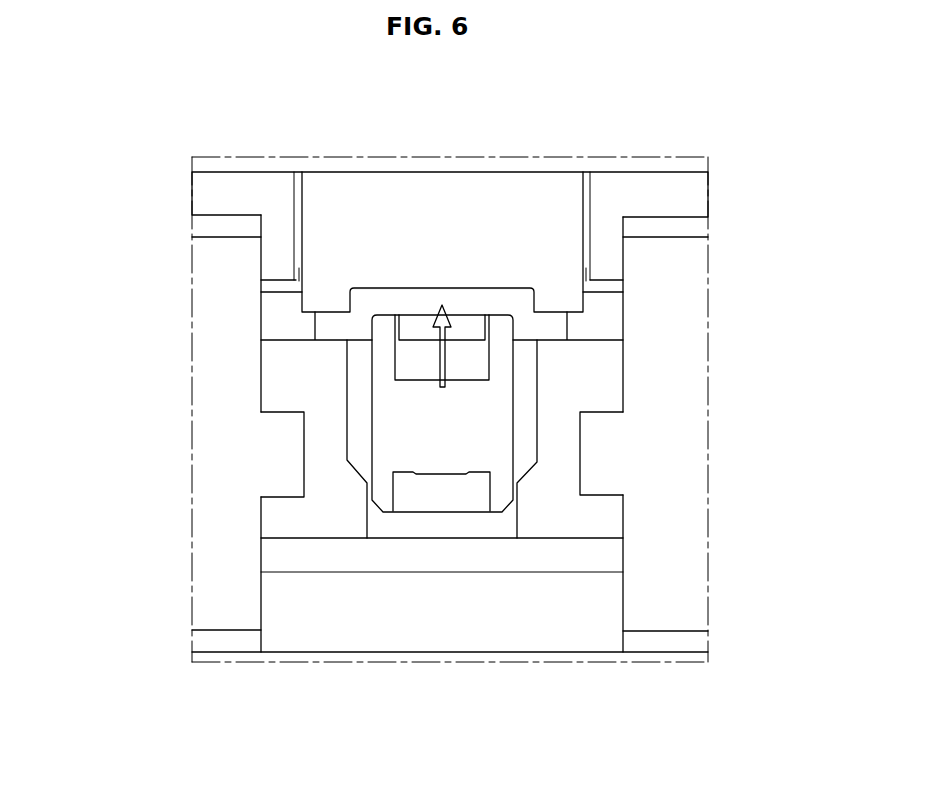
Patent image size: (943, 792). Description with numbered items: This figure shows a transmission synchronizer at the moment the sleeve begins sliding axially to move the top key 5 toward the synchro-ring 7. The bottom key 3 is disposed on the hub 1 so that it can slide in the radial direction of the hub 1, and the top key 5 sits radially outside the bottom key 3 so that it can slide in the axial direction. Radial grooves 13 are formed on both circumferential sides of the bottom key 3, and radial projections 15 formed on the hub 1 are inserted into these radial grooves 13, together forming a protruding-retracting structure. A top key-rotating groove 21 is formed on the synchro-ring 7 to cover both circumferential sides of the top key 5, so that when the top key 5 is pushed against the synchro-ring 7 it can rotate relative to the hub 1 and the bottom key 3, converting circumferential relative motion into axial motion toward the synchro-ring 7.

The hub 1 is at (680, 556).
The bottom key 3 is at (553, 502).
The top key 5 is at (482, 448).
The synchro-ring 7 is at (498, 208).
The radial grooves 13 is at (283, 413).
The radial projections 15 is at (275, 477).
The top key-rotating groove 21 is at (368, 310).